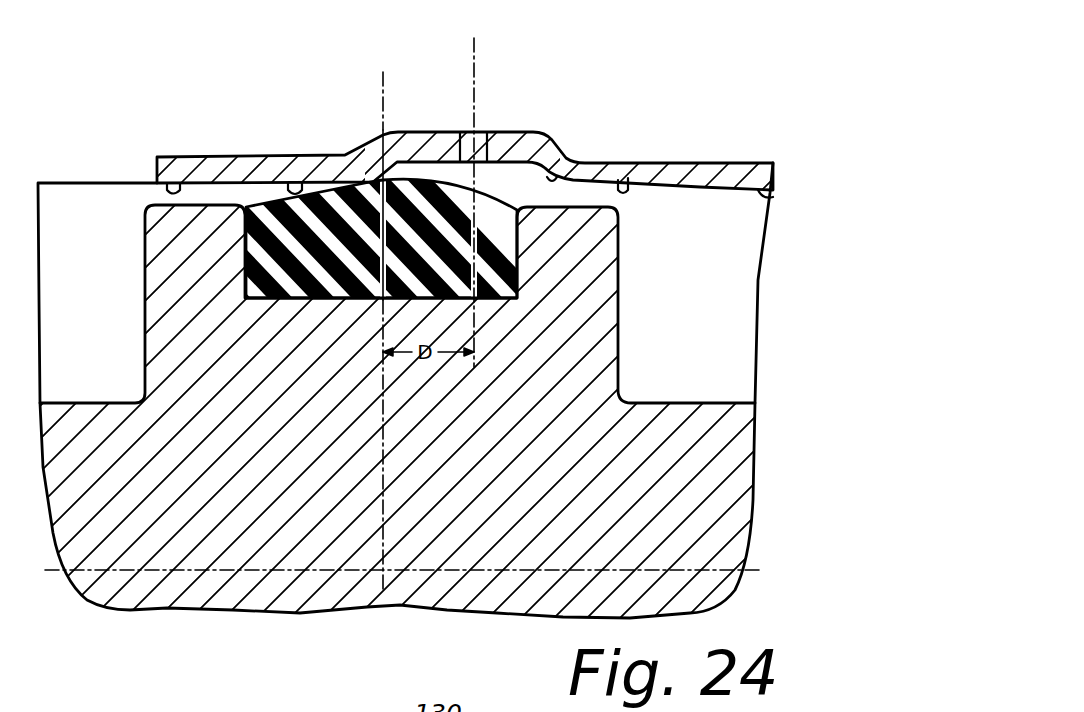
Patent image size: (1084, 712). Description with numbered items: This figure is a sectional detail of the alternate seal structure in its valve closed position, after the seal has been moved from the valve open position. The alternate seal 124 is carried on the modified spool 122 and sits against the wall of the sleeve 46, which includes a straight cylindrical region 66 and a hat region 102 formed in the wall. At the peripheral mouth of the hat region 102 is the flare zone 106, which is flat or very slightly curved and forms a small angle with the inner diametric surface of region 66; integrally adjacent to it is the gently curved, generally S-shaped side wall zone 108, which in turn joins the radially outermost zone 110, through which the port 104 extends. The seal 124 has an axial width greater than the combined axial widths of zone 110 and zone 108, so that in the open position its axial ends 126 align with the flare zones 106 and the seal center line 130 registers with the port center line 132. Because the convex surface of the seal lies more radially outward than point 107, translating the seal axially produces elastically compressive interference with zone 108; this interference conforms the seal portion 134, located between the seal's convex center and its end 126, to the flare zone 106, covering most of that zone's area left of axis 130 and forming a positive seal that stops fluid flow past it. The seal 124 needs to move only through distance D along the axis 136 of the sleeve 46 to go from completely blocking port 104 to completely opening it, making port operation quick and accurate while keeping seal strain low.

The sleeve 46 is at (752, 162).
The straight cylindrical region 66 is at (173, 192).
The hat region 102 is at (532, 132).
The port 104 is at (483, 133).
The flare zone 106 is at (290, 195).
The point 107 is at (376, 180).
The side wall zone 108 is at (554, 178).
The radially outermost zone 110 is at (436, 132).
The modified spool 122 is at (657, 402).
The alternate seal 124 is at (495, 276).
The axial end of seal 126 is at (245, 277).
The seal center line 130 is at (383, 72).
The port center line 132 is at (480, 62).
The seal portion 134 is at (272, 215).
The axis of sleeve 136 is at (538, 568).